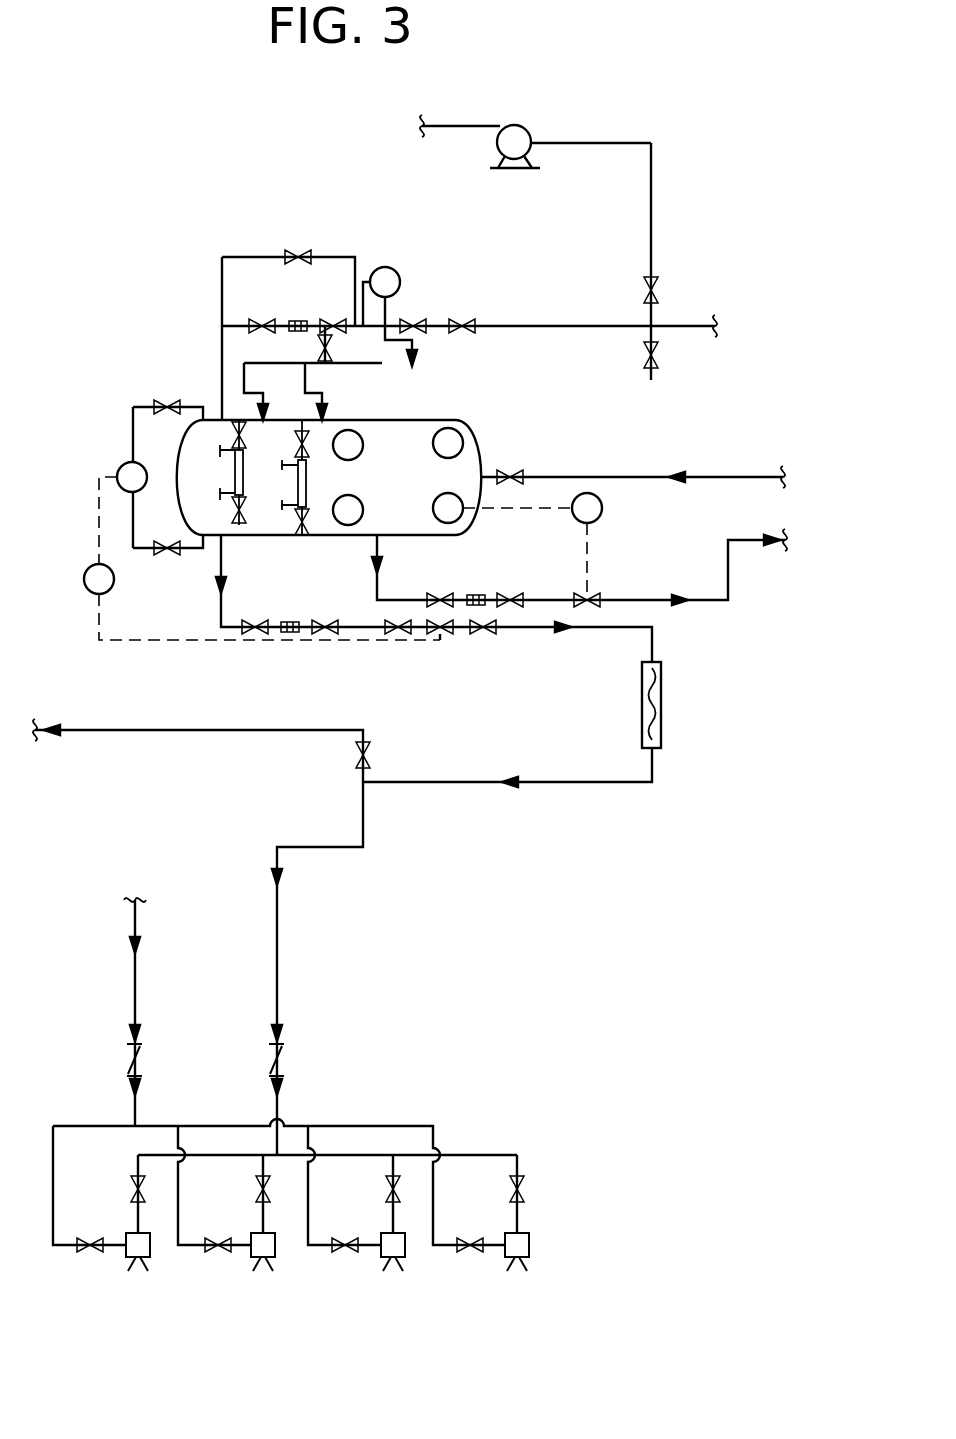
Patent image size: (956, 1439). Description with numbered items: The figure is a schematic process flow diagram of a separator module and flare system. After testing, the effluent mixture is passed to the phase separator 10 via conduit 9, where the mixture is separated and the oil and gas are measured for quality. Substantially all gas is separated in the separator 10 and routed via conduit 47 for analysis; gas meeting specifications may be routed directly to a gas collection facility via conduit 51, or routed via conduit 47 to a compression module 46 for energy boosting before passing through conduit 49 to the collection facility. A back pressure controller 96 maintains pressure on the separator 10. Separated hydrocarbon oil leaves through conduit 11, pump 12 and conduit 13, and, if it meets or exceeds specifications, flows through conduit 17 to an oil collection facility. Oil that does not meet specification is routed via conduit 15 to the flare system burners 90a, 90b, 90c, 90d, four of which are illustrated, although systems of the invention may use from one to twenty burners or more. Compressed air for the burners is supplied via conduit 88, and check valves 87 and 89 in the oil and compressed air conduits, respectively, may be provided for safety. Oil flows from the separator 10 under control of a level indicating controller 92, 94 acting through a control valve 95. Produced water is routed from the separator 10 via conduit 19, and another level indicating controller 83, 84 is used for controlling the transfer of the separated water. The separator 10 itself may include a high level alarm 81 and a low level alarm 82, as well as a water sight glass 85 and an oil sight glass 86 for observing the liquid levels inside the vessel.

The conduit 9 is at (728, 477).
The separator module 10 is at (430, 420).
The conduit 11 is at (221, 608).
The pump 12 is at (661, 702).
The conduit 13 is at (580, 785).
The conduit 15 is at (353, 848).
The conduit 17 is at (200, 730).
The conduit 19 is at (377, 592).
The compression module 46 is at (529, 131).
The conduit 47 is at (550, 325).
The conduit 49 is at (456, 126).
The conduit 51 is at (694, 325).
The high level alarm 81 is at (462, 430).
The low level alarm 82 is at (460, 520).
The level indicating controller 83 is at (602, 512).
The level indicating controller valve 84 is at (595, 597).
The water sight glass 85 is at (312, 493).
The oil sight glass 86 is at (248, 493).
The check valve 87 is at (283, 1053).
The conduit 88 is at (138, 968).
The check valve 89 is at (141, 1055).
The flare system burner 90a is at (127, 1258).
The flare system burner 90b is at (252, 1258).
The flare system burner 90c is at (382, 1258).
The flare system burner 90d is at (506, 1258).
The level indicating controller 92 is at (122, 466).
The level indicating controller 94 is at (88, 567).
The control valve 95 is at (443, 634).
The back pressure controller 96 is at (400, 280).